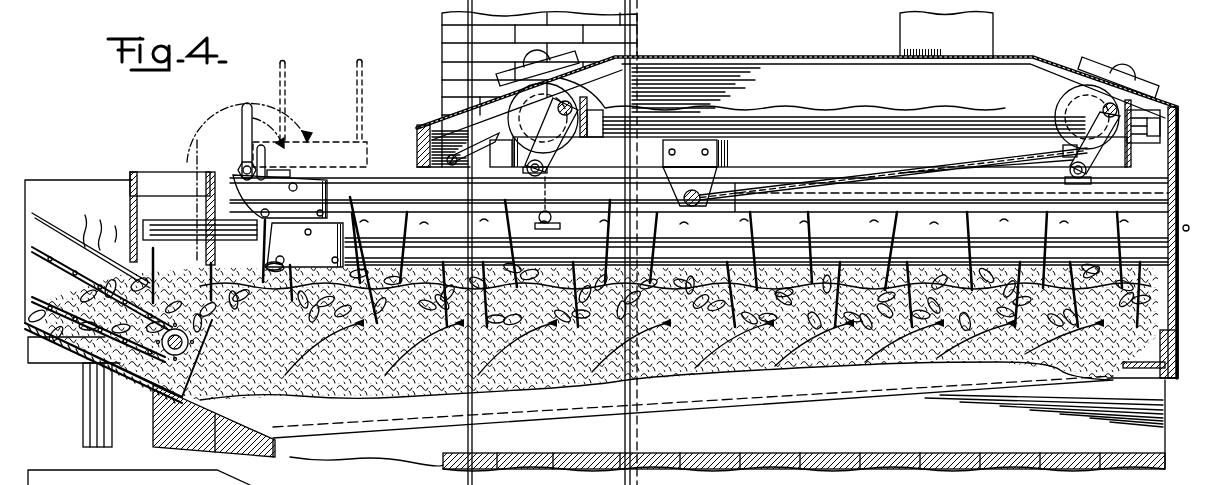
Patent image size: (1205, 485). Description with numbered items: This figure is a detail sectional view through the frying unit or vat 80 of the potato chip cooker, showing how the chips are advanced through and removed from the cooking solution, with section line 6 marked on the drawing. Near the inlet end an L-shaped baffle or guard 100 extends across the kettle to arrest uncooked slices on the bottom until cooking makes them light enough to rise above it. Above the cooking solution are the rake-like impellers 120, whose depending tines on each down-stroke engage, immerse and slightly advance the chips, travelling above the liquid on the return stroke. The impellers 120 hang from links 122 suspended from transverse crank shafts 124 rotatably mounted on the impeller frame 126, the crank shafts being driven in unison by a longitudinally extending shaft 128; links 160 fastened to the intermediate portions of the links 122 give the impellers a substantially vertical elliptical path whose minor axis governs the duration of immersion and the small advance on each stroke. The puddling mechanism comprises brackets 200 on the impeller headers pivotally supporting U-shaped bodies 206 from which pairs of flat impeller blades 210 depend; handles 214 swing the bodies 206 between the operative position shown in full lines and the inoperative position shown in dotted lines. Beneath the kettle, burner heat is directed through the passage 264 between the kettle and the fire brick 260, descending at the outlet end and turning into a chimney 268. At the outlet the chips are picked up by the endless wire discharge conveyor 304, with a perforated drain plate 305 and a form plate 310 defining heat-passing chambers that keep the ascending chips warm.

The section line 6- 6 is at (196, 153).
The frying unit or vat 80 is at (797, 406).
The L-shaped baffle or guard 100 is at (1113, 360).
The impellers 120 is at (374, 192).
The links 122 is at (1055, 125).
The crank shafts 124 is at (1103, 105).
The impeller frame 126 is at (1166, 74).
The longitudinally extending shaft 128 is at (824, 119).
The links 160 is at (945, 157).
The brackets 200 is at (288, 221).
The U-shaped bodies 206 is at (172, 218).
The impeller blades 210 is at (137, 208).
The handles 214 is at (242, 138).
The fire brick 260 is at (738, 455).
The passage 264 is at (420, 446).
The chimney 268 is at (717, 90).
The discharge conveyor 304 is at (45, 240).
The drain plate 305 is at (140, 377).
The form plate 310 is at (72, 272).